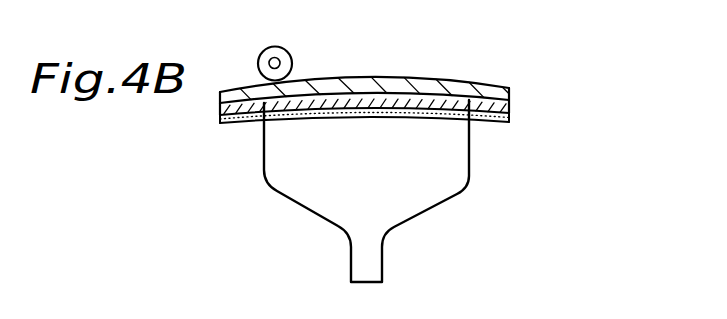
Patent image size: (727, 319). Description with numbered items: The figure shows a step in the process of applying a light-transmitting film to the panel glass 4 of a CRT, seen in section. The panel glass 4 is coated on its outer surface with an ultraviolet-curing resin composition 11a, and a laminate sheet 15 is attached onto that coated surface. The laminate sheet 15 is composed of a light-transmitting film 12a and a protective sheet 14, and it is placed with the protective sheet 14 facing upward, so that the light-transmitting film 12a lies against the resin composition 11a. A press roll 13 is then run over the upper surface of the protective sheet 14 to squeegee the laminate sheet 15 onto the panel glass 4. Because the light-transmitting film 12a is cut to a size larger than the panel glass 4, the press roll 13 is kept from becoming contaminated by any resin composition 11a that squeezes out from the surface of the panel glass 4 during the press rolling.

The panel glass 4 is at (469, 175).
The ultraviolet-curing resin composition 11a is at (470, 122).
The light-transmitting film 12a is at (509, 112).
The press roll 13 is at (262, 50).
The protective sheet 14 is at (505, 90).
The laminate sheet 15 is at (435, 89).